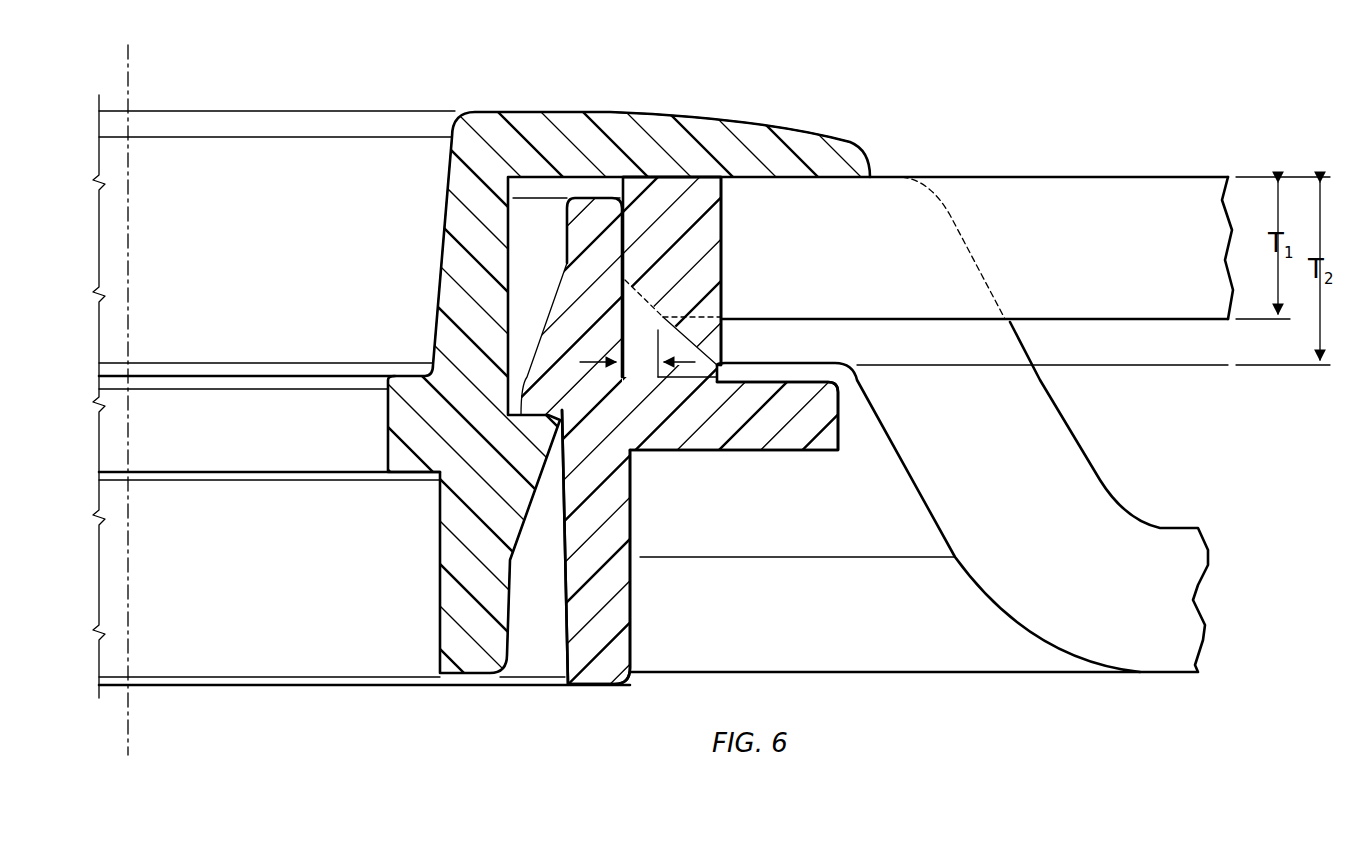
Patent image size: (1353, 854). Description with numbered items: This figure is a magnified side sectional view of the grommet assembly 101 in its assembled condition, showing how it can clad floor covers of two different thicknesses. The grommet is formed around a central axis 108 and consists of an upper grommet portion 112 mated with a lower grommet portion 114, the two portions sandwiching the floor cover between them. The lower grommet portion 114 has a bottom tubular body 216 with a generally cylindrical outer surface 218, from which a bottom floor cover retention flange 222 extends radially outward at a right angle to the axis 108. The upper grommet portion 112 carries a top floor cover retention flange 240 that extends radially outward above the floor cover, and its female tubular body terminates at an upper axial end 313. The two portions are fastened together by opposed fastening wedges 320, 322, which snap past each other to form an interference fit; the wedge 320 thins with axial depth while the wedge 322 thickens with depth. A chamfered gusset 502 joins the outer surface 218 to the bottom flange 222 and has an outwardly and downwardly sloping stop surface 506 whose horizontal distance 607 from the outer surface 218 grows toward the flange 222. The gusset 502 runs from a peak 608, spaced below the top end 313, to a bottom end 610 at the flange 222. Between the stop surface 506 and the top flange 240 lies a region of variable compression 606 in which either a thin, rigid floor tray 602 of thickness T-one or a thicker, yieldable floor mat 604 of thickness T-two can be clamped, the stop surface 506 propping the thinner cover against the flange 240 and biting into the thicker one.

The assembly 101 is at (405, 740).
The axis 108 is at (126, 68).
The upper grommet portion 112 is at (537, 92).
The lower grommet portion 114 is at (582, 702).
The bottom tubular body 216 is at (620, 605).
The outer surface 218 is at (627, 232).
The bottom floor cover retention flange 222 is at (800, 442).
The top floor cover retention flange 240 is at (647, 120).
The upper axial end of the female tubular body 313 is at (585, 195).
The fastening wedge 320 is at (527, 493).
The fastening wedge 322 is at (558, 330).
The chamfered gusset 502 is at (713, 385).
The stop surface 506 is at (647, 298).
The floor tray 602 is at (1093, 177).
The floor mat 604 is at (1190, 597).
The region of variable compression 606 is at (710, 214).
The horizontal distance 607 is at (687, 367).
The peak 608 is at (560, 297).
The bottom end 610 is at (718, 383).